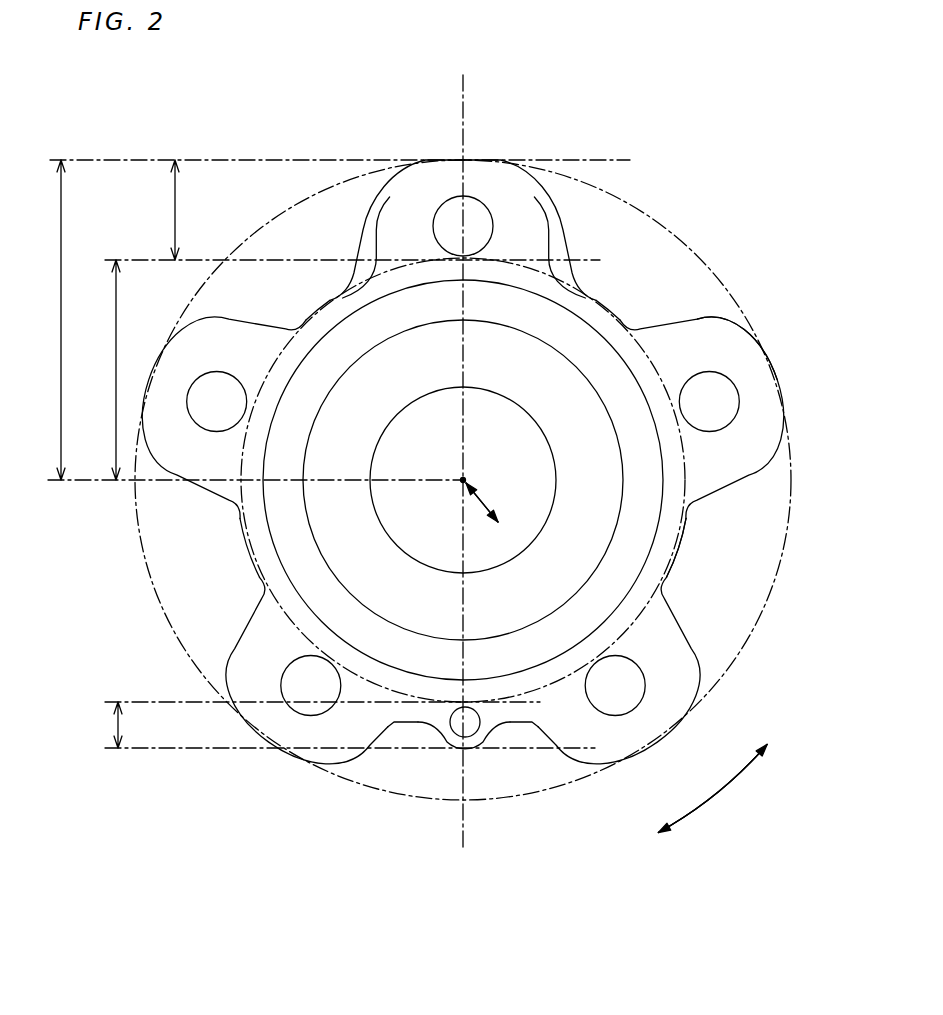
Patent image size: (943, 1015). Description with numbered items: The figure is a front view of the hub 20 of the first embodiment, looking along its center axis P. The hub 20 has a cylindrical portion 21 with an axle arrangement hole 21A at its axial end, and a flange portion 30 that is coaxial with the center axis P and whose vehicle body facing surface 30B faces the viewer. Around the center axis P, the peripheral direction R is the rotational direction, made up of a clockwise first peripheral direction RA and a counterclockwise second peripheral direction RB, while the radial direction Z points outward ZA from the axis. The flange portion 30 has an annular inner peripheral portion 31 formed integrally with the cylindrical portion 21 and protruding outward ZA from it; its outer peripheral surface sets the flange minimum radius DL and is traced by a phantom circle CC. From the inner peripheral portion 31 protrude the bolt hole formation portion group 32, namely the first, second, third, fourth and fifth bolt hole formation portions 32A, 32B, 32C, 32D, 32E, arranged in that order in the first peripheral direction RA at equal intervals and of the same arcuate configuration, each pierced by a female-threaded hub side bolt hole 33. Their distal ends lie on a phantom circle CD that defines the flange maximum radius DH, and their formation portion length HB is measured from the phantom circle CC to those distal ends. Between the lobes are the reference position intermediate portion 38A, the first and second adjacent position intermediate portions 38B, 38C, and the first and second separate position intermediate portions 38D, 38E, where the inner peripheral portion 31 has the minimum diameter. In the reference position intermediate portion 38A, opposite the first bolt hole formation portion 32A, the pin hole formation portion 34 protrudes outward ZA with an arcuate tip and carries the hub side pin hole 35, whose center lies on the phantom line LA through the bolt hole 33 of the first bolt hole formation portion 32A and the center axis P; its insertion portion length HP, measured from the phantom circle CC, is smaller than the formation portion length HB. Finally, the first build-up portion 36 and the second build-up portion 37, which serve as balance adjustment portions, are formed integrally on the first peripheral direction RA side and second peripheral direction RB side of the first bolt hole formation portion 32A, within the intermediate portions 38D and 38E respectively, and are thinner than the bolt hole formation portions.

The hub 20 is at (687, 147).
The cylindrical portion 21 is at (622, 367).
The axle arrangement hole 21A is at (410, 538).
The flange portion 30 is at (780, 398).
The vehicle body facing surface 30B is at (727, 333).
The inner peripheral portion 31 is at (654, 580).
The bolt hole formation portion group 32 is at (563, 135).
The first bolt hole formation portion 32A is at (472, 167).
The second bolt hole formation portion 32B is at (755, 364).
The third bolt hole formation portion 32C is at (655, 725).
The fourth bolt hole formation portion 32D is at (268, 715).
The fifth bolt hole formation portion 32E is at (167, 372).
The hub side bolt hole 33 is at (491, 220).
The pin hole formation portion 34 is at (450, 745).
The hub side pin hole 35 is at (478, 730).
The first build-up portion 36 is at (551, 240).
The second build-up portion 37 is at (375, 240).
The reference position intermediate portion 38A is at (530, 724).
The first adjacent position intermediate portion 38B is at (680, 546).
The second adjacent position intermediate portion 38C is at (248, 547).
The first separate position intermediate portion 38D is at (605, 303).
The second separate position intermediate portion 38E is at (327, 307).
The phantom circle CD is at (673, 228).
The phantom circle CC is at (650, 617).
The center axis P is at (461, 478).
The radial direction Z is at (484, 498).
The outward ZA is at (494, 516).
The phantom line LA is at (458, 852).
The flange maximum radius DH is at (44, 320).
The flange minimum radius DL is at (98, 370).
The formation portion length HB is at (157, 210).
The insertion portion length HP is at (101, 725).
The peripheral direction R is at (712, 788).
The first peripheral direction RA is at (697, 799).
The second peripheral direction RB is at (726, 775).